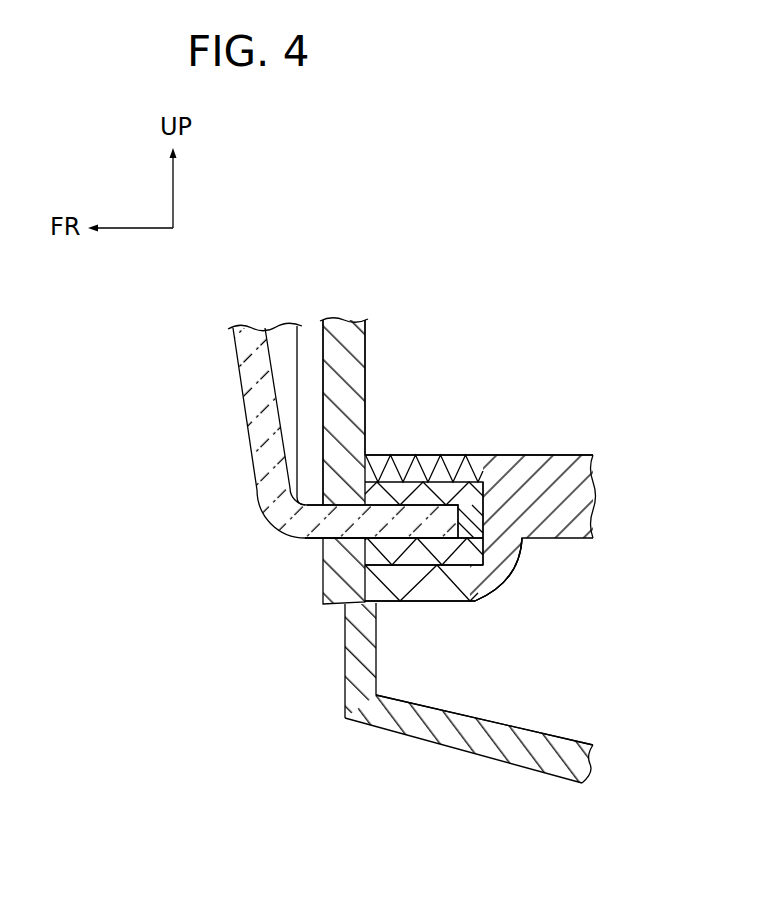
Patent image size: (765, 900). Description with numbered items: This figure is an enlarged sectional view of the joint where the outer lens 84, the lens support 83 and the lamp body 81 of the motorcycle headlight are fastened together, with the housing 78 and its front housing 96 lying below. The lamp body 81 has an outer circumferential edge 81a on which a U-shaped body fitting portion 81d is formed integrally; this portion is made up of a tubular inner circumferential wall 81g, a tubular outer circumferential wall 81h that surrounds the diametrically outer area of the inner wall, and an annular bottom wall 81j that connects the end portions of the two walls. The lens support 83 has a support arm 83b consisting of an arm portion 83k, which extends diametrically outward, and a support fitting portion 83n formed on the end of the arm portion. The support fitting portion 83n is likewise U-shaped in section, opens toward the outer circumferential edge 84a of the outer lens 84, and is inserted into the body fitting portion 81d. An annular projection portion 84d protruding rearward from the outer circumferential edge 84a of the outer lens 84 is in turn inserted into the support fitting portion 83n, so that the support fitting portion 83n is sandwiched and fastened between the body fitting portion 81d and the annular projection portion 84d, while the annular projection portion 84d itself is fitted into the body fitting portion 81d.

The outer lens 84 is at (238, 381).
The outer circumferential edge of the outer lens 84a is at (322, 578).
The annular projection portion 84d is at (420, 540).
The lens support 83 is at (368, 336).
The arm portion 83k is at (323, 372).
The support arm 83b is at (352, 384).
The support fitting portion 83n is at (486, 508).
The lamp body 81 is at (546, 453).
The inner circumferential wall 81g is at (438, 455).
The bottom wall 81j is at (514, 545).
The body fitting portion 81d is at (504, 594).
The outer circumferential wall 81h is at (458, 587).
The outer circumferential edge of the lamp body 81a is at (402, 604).
The housing 78 is at (553, 778).
The front housing 96 is at (493, 762).